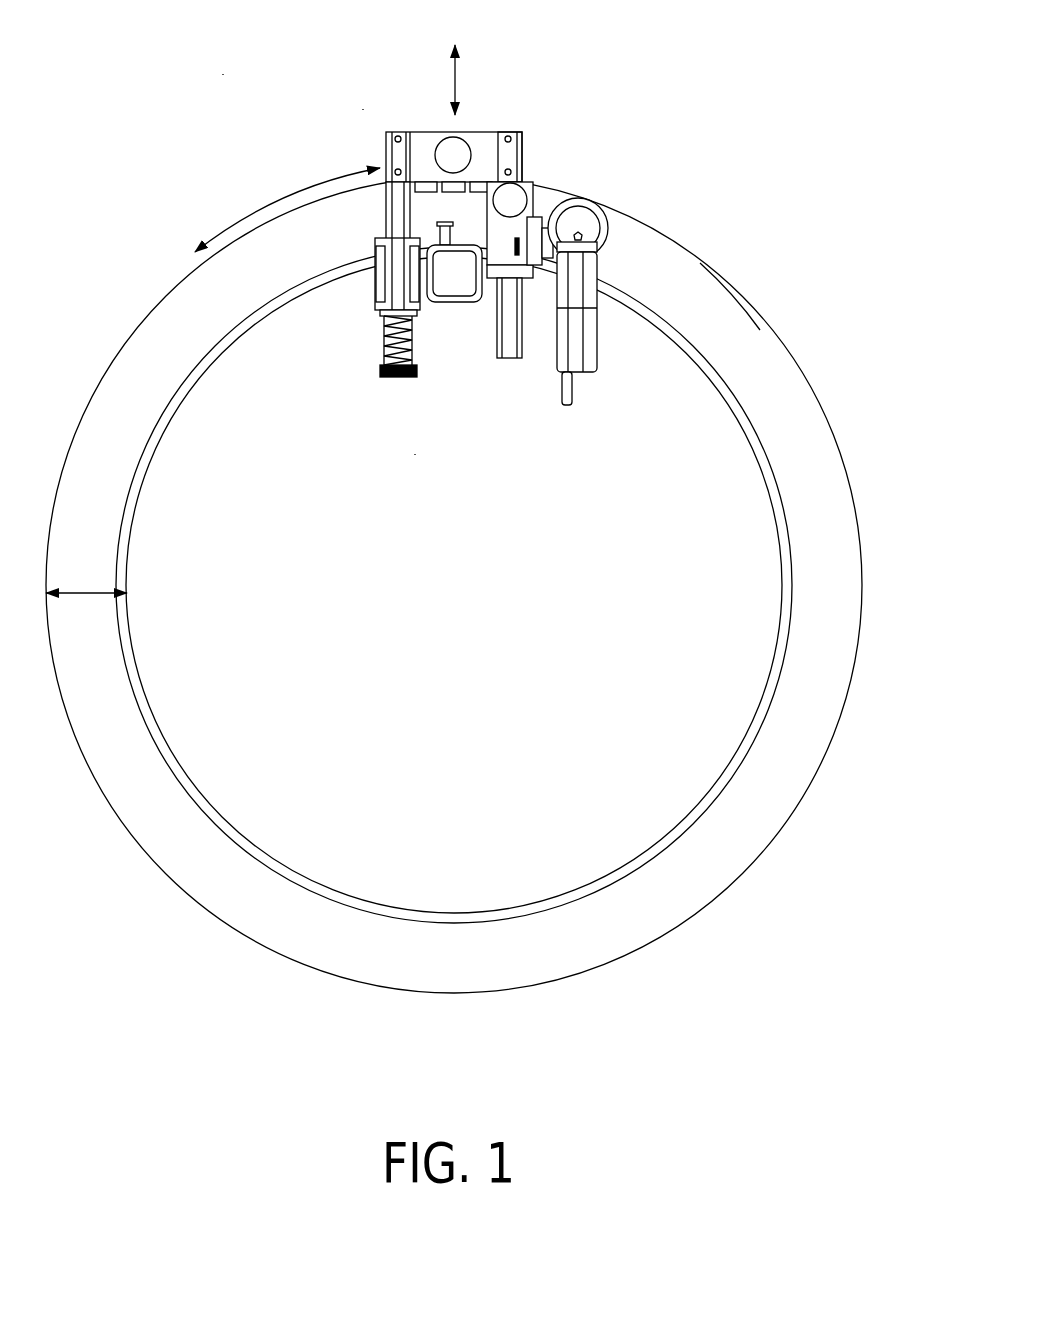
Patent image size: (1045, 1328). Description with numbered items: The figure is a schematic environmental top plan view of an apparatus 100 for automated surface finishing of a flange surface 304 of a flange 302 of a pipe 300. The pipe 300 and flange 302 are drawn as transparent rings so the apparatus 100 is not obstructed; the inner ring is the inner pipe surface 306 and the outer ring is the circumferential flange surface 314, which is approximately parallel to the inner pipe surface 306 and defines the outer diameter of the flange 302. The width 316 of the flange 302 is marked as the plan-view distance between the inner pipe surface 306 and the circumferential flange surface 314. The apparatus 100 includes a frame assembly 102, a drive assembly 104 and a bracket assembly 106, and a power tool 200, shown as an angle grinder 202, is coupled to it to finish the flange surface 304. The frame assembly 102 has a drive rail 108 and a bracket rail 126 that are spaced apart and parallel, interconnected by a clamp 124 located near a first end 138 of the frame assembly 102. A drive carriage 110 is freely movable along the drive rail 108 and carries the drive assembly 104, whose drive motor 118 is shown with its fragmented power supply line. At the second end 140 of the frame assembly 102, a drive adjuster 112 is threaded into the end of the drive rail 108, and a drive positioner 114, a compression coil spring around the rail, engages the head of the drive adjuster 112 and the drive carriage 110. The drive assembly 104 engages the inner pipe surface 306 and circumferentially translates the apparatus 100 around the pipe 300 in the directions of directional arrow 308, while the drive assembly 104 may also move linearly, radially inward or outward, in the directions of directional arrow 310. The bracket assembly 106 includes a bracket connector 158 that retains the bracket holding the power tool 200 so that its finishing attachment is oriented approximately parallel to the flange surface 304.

The apparatus 100 is at (223, 75).
The frame assembly 102 is at (493, 243).
The drive assembly 104 is at (518, 297).
The bracket assembly 106 is at (540, 287).
The drive rail 108 is at (388, 220).
The drive carriage 110 is at (375, 287).
The drive adjuster 112 is at (398, 383).
The drive positioner 114 is at (384, 342).
The drive motor 118 is at (455, 302).
The clamp 124 is at (483, 132).
The bracket rail 126 is at (522, 140).
The first end 138 is at (363, 110).
The second end 140 is at (415, 455).
The bracket connector 158 is at (530, 202).
The power tool 200 is at (614, 320).
The angle grinder 202 is at (600, 342).
The pipe 300 is at (486, 585).
The flange 302 is at (780, 343).
The flange surface 304 is at (740, 340).
The inner pipe surface 306 is at (235, 345).
The directional arrow 308 is at (258, 200).
The directional arrow 310 is at (448, 83).
The circumferential flange surface 314 is at (700, 263).
The width 316 is at (77, 592).